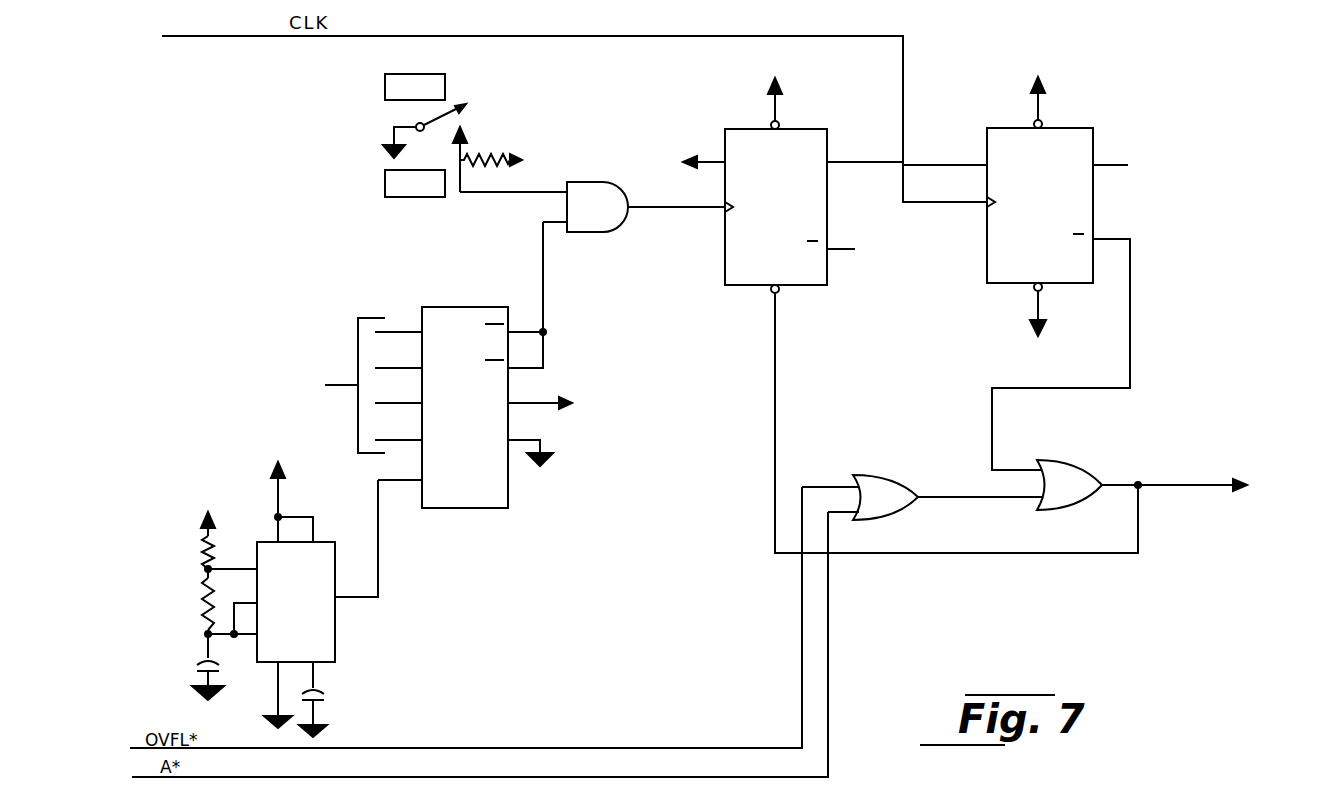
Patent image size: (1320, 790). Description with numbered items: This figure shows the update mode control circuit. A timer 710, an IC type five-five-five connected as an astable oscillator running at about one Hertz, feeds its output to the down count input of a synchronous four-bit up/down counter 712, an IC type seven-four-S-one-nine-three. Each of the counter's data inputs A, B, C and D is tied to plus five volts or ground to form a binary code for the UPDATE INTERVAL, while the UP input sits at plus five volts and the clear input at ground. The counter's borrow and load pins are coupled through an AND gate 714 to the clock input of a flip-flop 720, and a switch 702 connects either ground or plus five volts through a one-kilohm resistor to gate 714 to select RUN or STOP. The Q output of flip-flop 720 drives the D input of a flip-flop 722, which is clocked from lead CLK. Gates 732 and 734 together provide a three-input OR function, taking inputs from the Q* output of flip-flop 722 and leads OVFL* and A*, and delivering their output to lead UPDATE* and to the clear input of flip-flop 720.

The switch 702 is at (466, 106).
The timer 710 is at (335, 564).
The synchronous 4-bit up/down counter 712 is at (503, 500).
The AND gate 714 is at (634, 239).
The flip-flop 720 is at (808, 129).
The flip-flop 722 is at (1003, 128).
The gate 732 is at (888, 478).
The gate 734 is at (1077, 470).